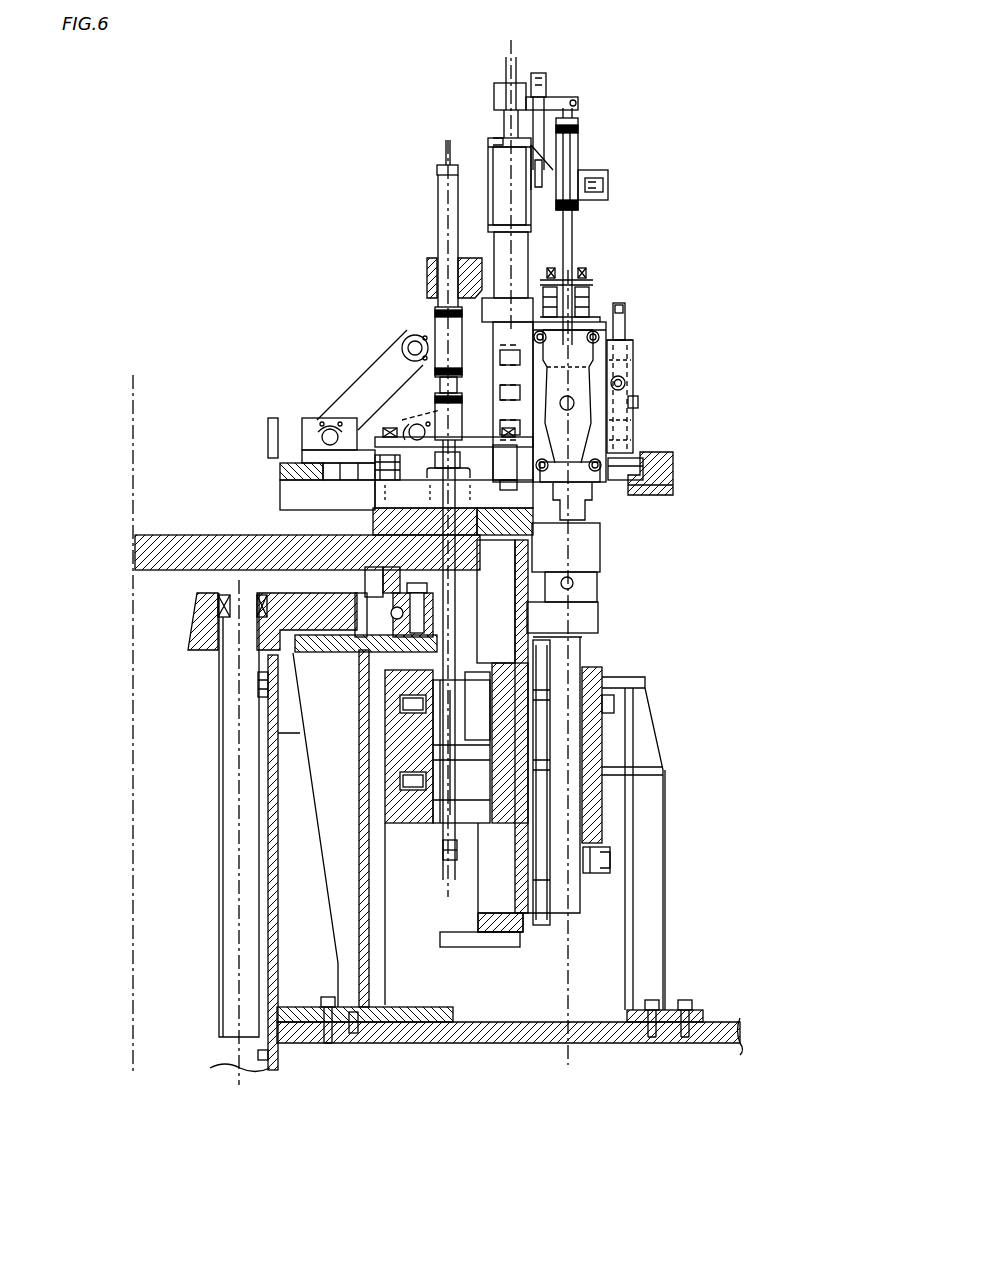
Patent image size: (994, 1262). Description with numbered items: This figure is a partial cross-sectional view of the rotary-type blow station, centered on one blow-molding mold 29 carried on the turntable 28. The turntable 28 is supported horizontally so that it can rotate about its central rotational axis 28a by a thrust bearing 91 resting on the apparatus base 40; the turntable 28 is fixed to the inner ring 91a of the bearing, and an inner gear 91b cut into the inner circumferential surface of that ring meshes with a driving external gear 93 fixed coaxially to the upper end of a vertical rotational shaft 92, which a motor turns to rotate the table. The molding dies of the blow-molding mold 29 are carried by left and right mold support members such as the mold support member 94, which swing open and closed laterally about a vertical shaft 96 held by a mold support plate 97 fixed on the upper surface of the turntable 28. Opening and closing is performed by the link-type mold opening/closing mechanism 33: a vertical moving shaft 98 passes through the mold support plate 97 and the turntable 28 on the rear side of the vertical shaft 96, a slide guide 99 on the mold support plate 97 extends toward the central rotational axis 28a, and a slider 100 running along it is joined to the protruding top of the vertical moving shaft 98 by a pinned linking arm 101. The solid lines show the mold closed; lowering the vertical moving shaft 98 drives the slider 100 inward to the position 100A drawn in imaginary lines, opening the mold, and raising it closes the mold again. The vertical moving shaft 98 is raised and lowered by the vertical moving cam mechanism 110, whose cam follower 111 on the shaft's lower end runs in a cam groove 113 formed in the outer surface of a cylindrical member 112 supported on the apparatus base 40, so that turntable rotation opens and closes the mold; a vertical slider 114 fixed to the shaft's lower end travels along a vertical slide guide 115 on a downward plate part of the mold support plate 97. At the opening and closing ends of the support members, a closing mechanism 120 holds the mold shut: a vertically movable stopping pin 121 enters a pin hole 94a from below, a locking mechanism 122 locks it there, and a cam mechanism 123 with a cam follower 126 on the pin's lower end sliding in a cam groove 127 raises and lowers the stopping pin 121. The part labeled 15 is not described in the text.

The nozzle 15 is at (585, 498).
The turntable 28 is at (227, 537).
The central rotational axis 28a is at (135, 393).
The blow-molding mold 29 is at (633, 358).
The mold opening/closing mechanism 33 is at (362, 345).
The apparatus base 40 is at (487, 1020).
The thrust bearing 91 is at (403, 620).
The inner ring 91a is at (365, 615).
The inner gear 91b is at (303, 653).
The vertical rotational shaft 92 is at (228, 823).
The driving external gear 93 is at (287, 635).
The mold support member 94 is at (608, 437).
The pin hole 94a is at (635, 340).
The vertical shaft 96 is at (505, 267).
The mold support plate 97 is at (540, 540).
The vertical moving shaft 98 is at (440, 220).
The slide guide 99 is at (277, 477).
The slider 100 is at (317, 422).
The slider position 100A is at (290, 422).
The linking arm 101 is at (360, 388).
The vertical moving cam mechanism 110 is at (397, 813).
The cam follower 111 is at (407, 720).
The cylindrical member 112 is at (400, 763).
The cam groove 113 is at (440, 745).
The vertical slider 114 is at (463, 707).
The vertical slide guide 115 is at (485, 760).
The closing mechanism 120 is at (657, 315).
The stopping pin 121 is at (622, 318).
The locking mechanism 122 is at (627, 383).
The cam mechanism 123 is at (704, 484).
The cam follower 126 is at (640, 470).
The cam groove 127 is at (655, 490).